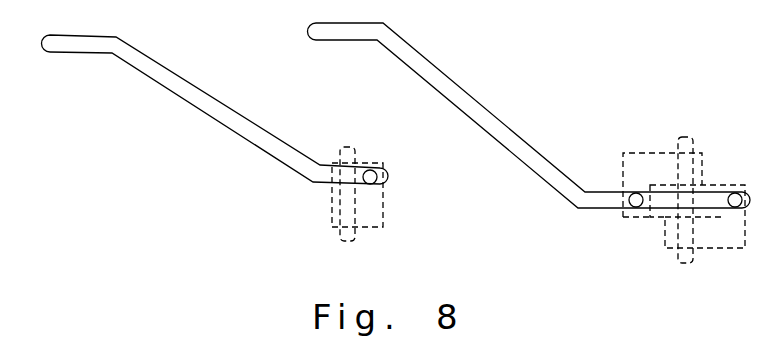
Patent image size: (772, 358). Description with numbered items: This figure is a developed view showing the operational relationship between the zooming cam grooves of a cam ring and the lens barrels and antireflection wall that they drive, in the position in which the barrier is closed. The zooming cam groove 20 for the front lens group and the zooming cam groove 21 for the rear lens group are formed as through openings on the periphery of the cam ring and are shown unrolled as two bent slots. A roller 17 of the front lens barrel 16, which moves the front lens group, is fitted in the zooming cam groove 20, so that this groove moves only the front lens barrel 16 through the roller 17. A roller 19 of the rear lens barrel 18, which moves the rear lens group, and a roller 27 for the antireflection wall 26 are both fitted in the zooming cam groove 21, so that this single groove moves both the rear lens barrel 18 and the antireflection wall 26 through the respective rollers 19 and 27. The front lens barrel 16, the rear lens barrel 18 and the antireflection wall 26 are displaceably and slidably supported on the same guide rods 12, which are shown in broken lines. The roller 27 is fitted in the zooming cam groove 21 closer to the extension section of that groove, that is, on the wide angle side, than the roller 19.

The guide rods 12 is at (340, 152).
The front lens barrel 16 is at (375, 229).
The roller 17 is at (373, 170).
The rear lens barrel 18 is at (636, 160).
The roller 19 is at (634, 208).
The zooming cam groove 20 is at (222, 102).
The zooming cam groove 21 is at (492, 107).
The antireflection wall 26 is at (715, 235).
The roller 27 is at (733, 193).